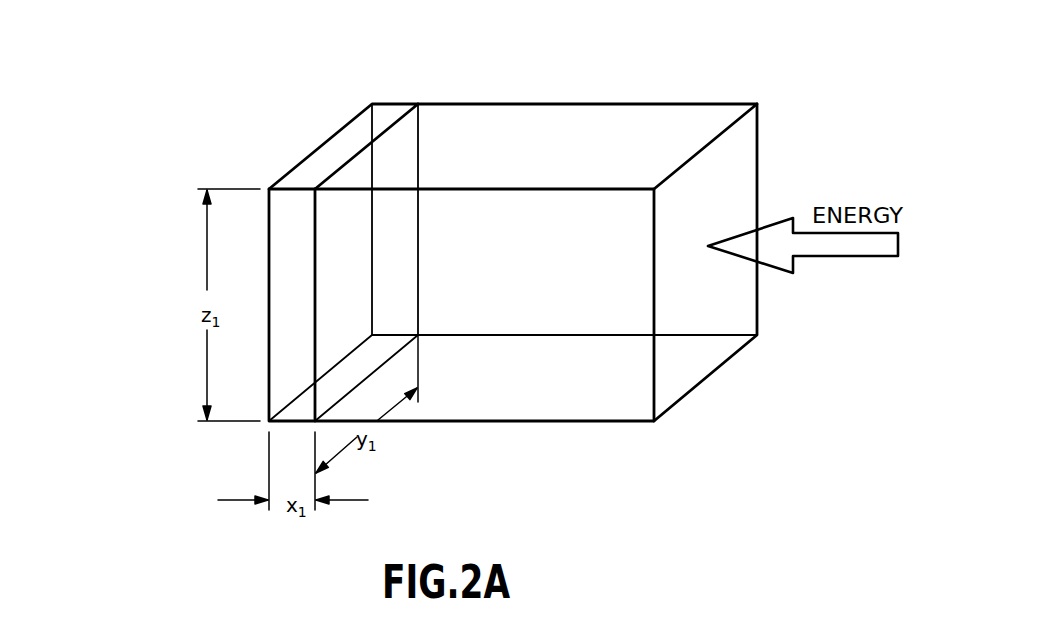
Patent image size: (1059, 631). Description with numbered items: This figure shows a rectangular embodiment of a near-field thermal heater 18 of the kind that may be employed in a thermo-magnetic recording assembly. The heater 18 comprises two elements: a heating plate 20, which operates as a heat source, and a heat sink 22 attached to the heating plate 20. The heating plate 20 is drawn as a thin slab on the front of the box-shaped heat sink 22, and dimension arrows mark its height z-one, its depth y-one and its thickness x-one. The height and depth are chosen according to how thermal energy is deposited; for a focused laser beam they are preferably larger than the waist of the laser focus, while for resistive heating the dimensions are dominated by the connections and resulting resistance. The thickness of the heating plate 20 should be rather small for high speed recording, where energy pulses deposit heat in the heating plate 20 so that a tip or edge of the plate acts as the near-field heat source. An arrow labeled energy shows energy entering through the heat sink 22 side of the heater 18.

The near-field thermal heater 18 is at (818, 40).
The heating plate 20 is at (320, 147).
The heat sink 22 is at (563, 104).